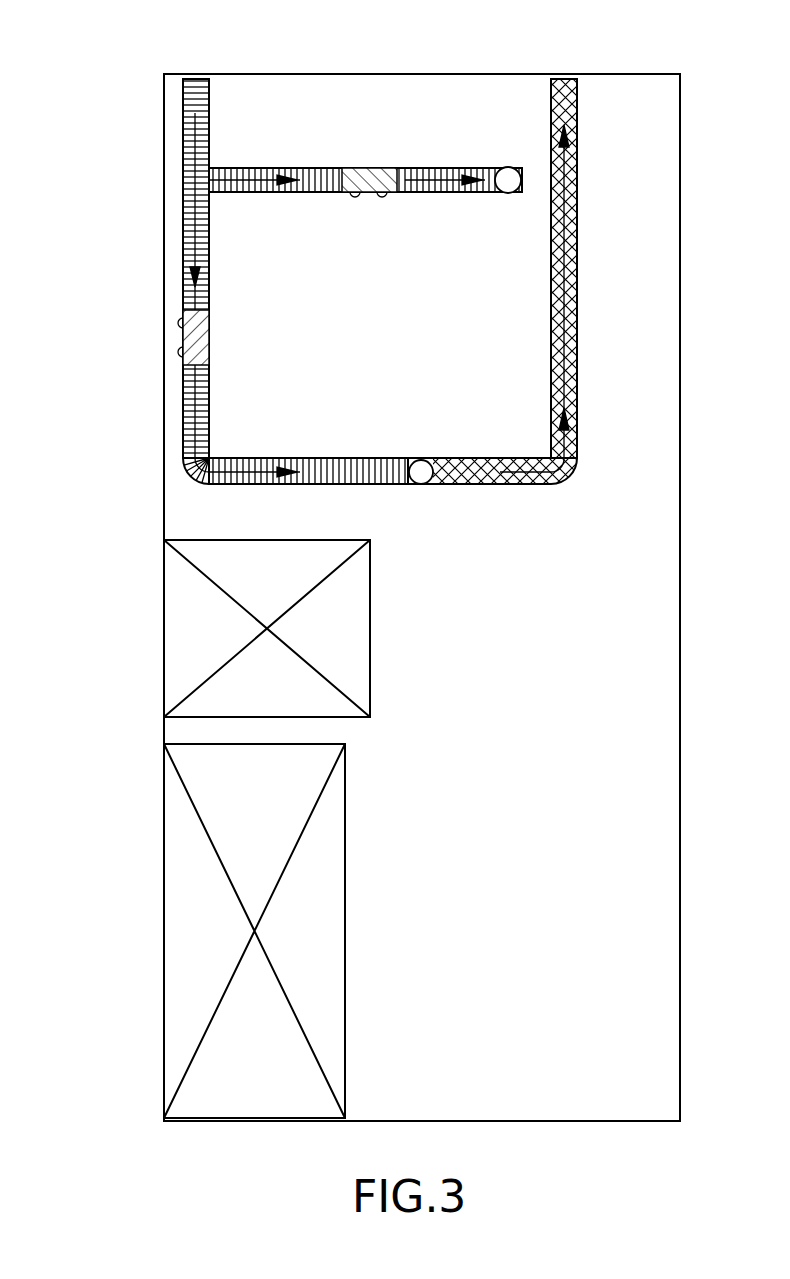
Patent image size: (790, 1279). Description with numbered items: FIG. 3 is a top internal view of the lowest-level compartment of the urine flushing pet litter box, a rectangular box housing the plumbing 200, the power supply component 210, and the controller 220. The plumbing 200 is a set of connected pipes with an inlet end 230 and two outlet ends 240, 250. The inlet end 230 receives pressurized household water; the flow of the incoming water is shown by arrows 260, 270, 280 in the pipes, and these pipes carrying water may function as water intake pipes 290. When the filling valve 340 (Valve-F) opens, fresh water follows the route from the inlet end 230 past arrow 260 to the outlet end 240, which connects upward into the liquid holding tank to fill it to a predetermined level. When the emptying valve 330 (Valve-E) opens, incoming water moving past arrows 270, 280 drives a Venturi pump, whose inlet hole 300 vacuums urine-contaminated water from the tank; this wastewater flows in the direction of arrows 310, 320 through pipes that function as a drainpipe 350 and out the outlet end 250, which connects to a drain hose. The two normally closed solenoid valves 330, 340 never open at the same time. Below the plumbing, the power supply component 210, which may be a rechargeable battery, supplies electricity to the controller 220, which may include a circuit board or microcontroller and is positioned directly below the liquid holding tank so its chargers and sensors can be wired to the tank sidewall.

The plumbing 200 is at (130, 73).
The power supply component 210 is at (168, 640).
The controller 220 is at (168, 900).
The inlet end 230 is at (196, 80).
The outlet end 240 is at (510, 168).
The outlet end 250 is at (566, 80).
The arrow 260 is at (236, 192).
The arrow 270 is at (183, 232).
The arrow 280 is at (186, 462).
The water intake pipes 290 is at (183, 423).
The inlet hole 300 is at (421, 484).
The arrow 310 is at (570, 437).
The arrow 320 is at (568, 258).
The valve 330 is at (180, 335).
The valve 340 is at (391, 192).
The drainpipe 350 is at (568, 484).